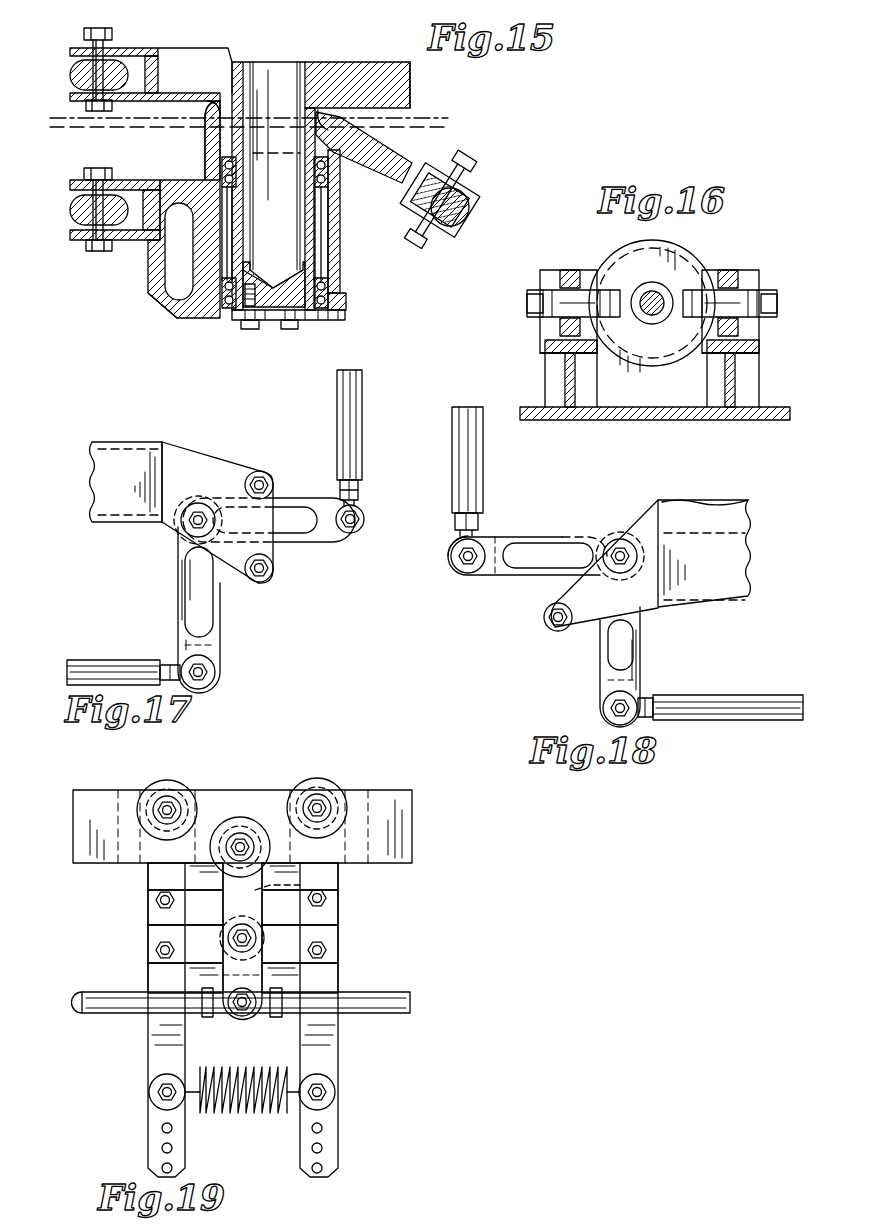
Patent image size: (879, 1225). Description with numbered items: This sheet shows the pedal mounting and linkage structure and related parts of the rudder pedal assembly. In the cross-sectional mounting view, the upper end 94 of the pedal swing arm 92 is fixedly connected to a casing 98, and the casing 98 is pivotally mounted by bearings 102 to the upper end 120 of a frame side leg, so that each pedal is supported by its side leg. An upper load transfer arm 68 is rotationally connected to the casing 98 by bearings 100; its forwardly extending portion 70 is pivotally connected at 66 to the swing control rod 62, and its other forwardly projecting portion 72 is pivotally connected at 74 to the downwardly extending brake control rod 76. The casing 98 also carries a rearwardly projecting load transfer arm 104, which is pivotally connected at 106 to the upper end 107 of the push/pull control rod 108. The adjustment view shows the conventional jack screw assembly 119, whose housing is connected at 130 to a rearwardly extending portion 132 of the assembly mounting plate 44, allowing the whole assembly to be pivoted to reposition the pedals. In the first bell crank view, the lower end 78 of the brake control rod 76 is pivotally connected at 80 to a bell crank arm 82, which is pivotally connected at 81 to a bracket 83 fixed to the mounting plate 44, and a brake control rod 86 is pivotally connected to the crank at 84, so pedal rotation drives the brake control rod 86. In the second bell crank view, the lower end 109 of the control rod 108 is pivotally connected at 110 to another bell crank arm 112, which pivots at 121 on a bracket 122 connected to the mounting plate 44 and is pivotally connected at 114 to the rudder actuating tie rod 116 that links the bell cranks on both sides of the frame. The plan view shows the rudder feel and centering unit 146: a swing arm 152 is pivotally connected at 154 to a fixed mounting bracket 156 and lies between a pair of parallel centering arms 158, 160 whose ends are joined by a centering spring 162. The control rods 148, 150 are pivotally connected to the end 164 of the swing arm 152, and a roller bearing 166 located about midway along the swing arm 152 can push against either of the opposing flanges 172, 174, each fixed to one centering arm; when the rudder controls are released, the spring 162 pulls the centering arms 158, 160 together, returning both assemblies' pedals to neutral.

In FIG. 15, the forwardly projecting portion 72 is at (158, 49).
In FIG. 15, the pivotal connection 74 is at (72, 75).
In FIG. 15, the brake control rod 76 is at (86, 104).
In FIG. 17, the brake control rod 76 is at (352, 402).
In FIG. 15, the forwardly extending portion 70 is at (128, 180).
In FIG. 15, the upper load transfer arm 68 is at (148, 293).
In FIG. 15, the swing control rod 62 is at (72, 208).
In FIG. 15, the pivotal connection 66 is at (86, 245).
In FIG. 15, the upper end of swing arm 94 is at (318, 66).
In FIG. 15, the pedal swing arm 92 is at (400, 63).
In FIG. 15, the bearings 100 is at (222, 160).
In FIG. 15, the bearings 102 is at (222, 178).
In FIG. 15, the upper end of side leg 120 is at (212, 312).
In FIG. 15, the casing 98 is at (283, 322).
In FIG. 15, the rearwardly projecting load transfer arm 104 is at (398, 160).
In FIG. 15, the pivotal connection 106 is at (464, 185).
In FIG. 15, the upper end of control rod 107 is at (470, 212).
In FIG. 16, the jack screw assembly 119 is at (628, 258).
In FIG. 16, the housing connection 130 is at (760, 285).
In FIG. 16, the rearwardly extending portion 132 is at (665, 421).
In FIG. 17, the assembly mounting plate 44 is at (112, 442).
In FIG. 18, the assembly mounting plate 44 is at (722, 500).
In FIG. 17, the bracket 83 is at (195, 465).
In FIG. 17, the pivotal connection 81 is at (185, 530).
In FIG. 17, the bell crank arm 82 is at (295, 535).
In FIG. 17, the pivotal connection 80 is at (350, 535).
In FIG. 17, the lower end of brake control rod 78 is at (358, 492).
In FIG. 17, the pivotal connection 84 is at (215, 666).
In FIG. 17, the brake control rod 86 is at (108, 665).
In FIG. 18, the push/pull control rod 108 is at (478, 462).
In FIG. 18, the pivotal connection 110 is at (475, 548).
In FIG. 18, the lower end of control rod 109 is at (450, 550).
In FIG. 18, the bell crank arm 112 is at (530, 575).
In FIG. 18, the pivotal connection 121 is at (618, 540).
In FIG. 18, the bracket 122 is at (585, 630).
In FIG. 18, the pivotal connection 114 is at (638, 700).
In FIG. 18, the rudder actuating tie rod 116 is at (735, 705).
In FIG. 19, the fixed mounting bracket 156 is at (390, 790).
In FIG. 19, the pivotal connection 154 is at (250, 835).
In FIG. 19, the end of swing arm 164 is at (240, 1010).
In FIG. 19, the centering arm 158 is at (150, 1040).
In FIG. 19, the centering arm 160 is at (338, 1052).
In FIG. 19, the swing arm 152 is at (185, 895).
In FIG. 19, the flange 172 is at (195, 928).
In FIG. 19, the flange 174 is at (295, 917).
In FIG. 19, the roller bearing 166 is at (340, 882).
In FIG. 19, the control rod 150 is at (388, 990).
In FIG. 19, the rudder control rod 148 is at (108, 995).
In FIG. 19, the rudder feel and centering unit 146 is at (405, 955).
In FIG. 19, the centering spring 162 is at (252, 1113).